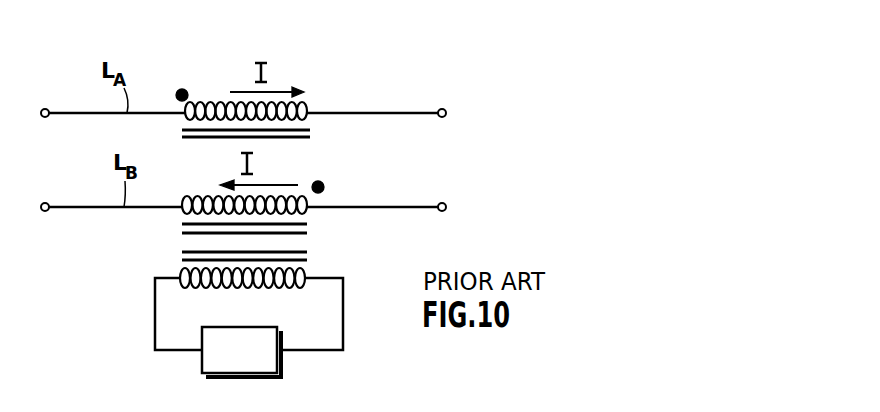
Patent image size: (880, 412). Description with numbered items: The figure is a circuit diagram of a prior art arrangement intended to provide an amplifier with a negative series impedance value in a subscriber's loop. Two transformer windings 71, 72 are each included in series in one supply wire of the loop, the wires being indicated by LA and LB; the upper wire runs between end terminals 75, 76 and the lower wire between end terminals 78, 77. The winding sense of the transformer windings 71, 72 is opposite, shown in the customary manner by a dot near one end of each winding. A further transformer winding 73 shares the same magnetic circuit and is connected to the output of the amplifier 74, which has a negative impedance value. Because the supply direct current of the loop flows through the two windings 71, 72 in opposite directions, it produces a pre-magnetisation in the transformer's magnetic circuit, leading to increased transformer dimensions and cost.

The transformer winding 71 is at (310, 106).
The transformer winding 72 is at (309, 200).
The further transformer winding 73 is at (286, 289).
The amplifier 74 is at (218, 327).
The terminal 75 is at (48, 109).
The terminal 76 is at (442, 109).
The terminal 77 is at (442, 203).
The terminal 78 is at (48, 204).